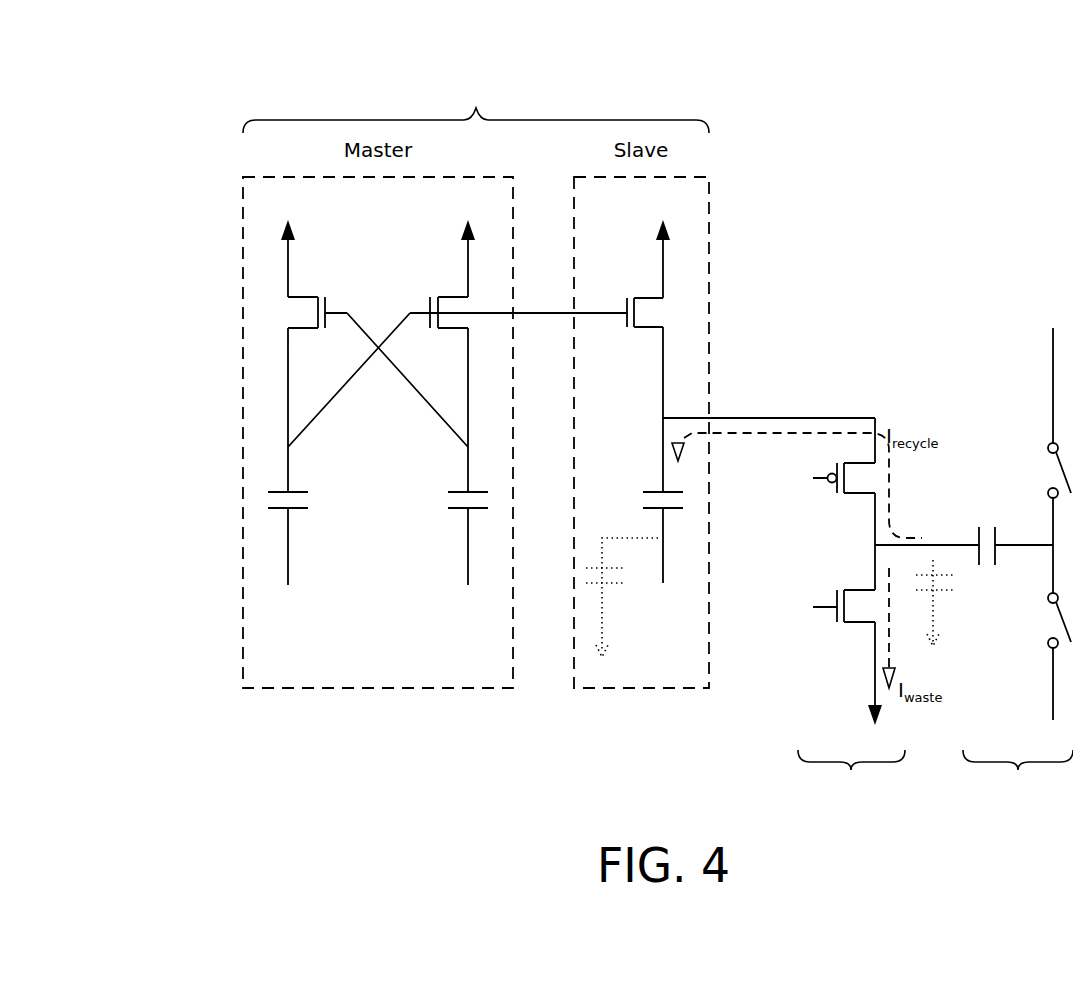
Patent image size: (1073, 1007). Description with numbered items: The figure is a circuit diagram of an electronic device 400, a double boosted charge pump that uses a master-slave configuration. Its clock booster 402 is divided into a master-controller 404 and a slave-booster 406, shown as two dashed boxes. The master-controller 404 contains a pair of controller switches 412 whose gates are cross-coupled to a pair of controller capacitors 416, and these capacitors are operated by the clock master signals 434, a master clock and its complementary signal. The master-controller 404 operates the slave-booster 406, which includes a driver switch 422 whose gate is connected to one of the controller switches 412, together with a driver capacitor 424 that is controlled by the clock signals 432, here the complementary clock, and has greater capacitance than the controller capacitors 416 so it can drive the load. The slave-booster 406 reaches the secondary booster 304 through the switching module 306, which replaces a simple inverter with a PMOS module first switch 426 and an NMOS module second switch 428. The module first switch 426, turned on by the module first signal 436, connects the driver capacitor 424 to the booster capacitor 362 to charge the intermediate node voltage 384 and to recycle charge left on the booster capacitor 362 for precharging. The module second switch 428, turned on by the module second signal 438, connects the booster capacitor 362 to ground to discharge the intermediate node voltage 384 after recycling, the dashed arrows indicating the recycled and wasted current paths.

The electronic device 400 is at (357, 82).
The clock booster 402 is at (476, 107).
The master-controller 404 is at (243, 188).
The slave-booster 406 is at (710, 188).
The controller switches 412 is at (300, 296).
The controller capacitors 416 is at (306, 492).
The driver switch 422 is at (641, 293).
The driver capacitor 424 is at (680, 491).
The module first switch 426 is at (833, 472).
The module second switch 428 is at (836, 617).
The clock signals 432 is at (668, 607).
The clock master signals 434 is at (318, 624).
The module first signal 436 is at (770, 478).
The module second signal 438 is at (761, 603).
The intermediate node voltage 384 is at (945, 540).
The booster capacitor 362 is at (1000, 568).
The switching module 306 is at (851, 775).
The secondary booster 304 is at (1018, 548).